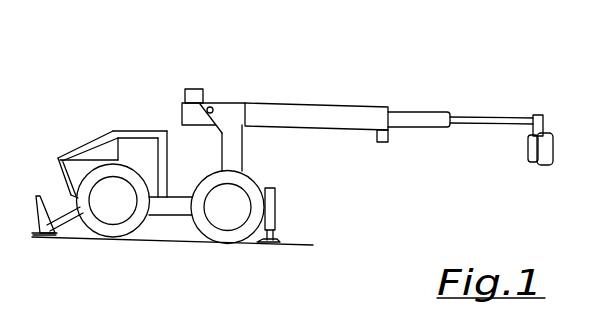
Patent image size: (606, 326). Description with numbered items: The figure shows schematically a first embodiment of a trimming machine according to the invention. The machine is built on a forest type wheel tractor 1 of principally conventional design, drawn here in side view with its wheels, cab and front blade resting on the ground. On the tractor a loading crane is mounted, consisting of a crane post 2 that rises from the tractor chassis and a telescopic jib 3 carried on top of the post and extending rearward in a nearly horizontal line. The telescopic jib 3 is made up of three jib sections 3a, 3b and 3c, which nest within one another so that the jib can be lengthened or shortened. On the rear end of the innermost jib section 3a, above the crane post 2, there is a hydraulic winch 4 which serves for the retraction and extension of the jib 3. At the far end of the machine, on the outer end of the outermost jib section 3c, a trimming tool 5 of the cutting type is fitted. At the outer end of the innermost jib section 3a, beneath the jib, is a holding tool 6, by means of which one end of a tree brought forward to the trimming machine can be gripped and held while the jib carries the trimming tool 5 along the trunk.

The forest type wheel tractor 1 is at (170, 208).
The crane post 2 is at (239, 160).
The telescopic jib 3 is at (400, 43).
The innermost jib section 3a is at (283, 114).
The jib section 3b is at (445, 118).
The outermost jib section 3c is at (498, 120).
The hydraulic winch 4 is at (202, 87).
The trimming tool 5 is at (546, 143).
The holding tool 6 is at (383, 140).